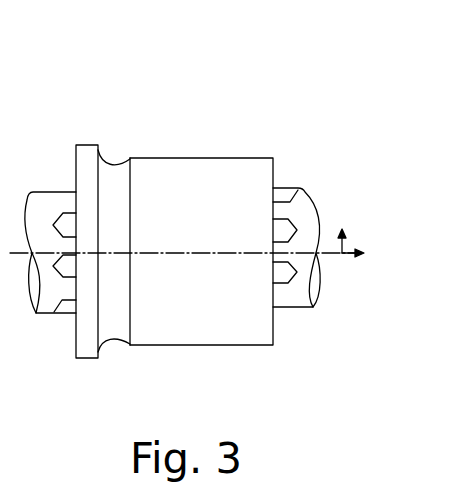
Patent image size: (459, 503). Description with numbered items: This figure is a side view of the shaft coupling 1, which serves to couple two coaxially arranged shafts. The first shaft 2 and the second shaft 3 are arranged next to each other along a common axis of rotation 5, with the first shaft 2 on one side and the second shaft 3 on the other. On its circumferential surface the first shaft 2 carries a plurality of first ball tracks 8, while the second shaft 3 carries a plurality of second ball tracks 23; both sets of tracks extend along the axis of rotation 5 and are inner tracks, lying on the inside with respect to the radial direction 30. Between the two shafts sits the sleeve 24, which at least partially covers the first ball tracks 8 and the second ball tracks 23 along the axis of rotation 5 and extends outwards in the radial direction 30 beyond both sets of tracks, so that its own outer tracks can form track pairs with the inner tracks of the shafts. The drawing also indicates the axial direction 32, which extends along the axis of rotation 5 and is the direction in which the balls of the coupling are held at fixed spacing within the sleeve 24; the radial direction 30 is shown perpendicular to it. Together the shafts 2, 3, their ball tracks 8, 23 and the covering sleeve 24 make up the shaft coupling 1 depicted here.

The shaft coupling 1 is at (318, 85).
The first shaft 2 is at (50, 297).
The second shaft 3 is at (308, 202).
The axis of rotation 5 is at (324, 257).
The first ball tracks 8 is at (68, 223).
The second ball tracks 23 is at (280, 277).
The sleeve 24 is at (222, 177).
The radial direction 30 is at (358, 231).
The axial direction 32 is at (365, 267).